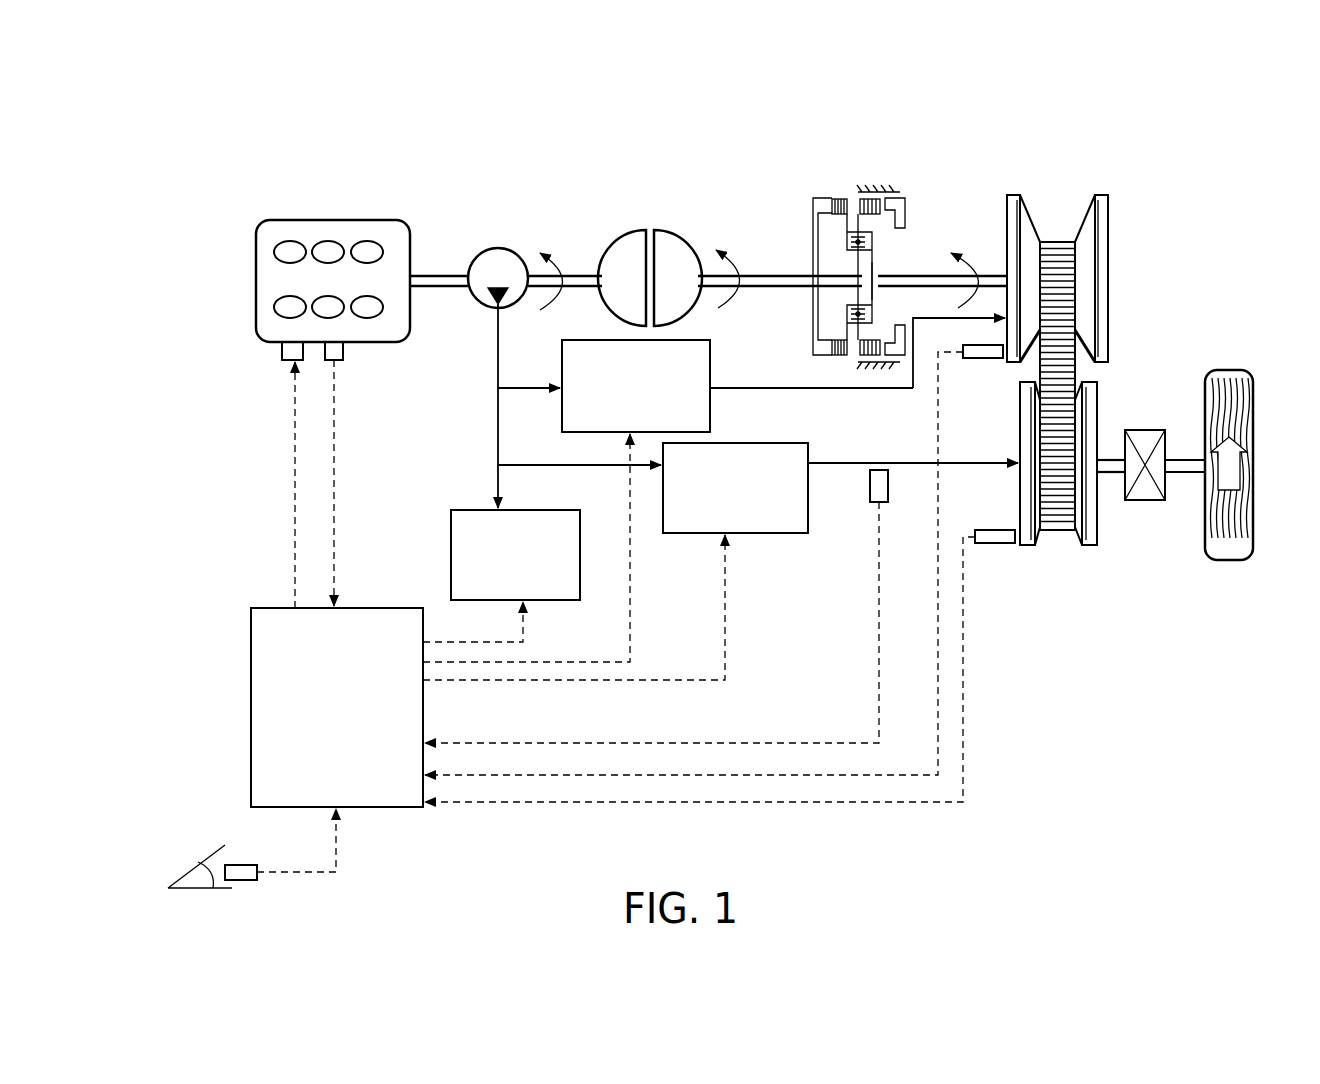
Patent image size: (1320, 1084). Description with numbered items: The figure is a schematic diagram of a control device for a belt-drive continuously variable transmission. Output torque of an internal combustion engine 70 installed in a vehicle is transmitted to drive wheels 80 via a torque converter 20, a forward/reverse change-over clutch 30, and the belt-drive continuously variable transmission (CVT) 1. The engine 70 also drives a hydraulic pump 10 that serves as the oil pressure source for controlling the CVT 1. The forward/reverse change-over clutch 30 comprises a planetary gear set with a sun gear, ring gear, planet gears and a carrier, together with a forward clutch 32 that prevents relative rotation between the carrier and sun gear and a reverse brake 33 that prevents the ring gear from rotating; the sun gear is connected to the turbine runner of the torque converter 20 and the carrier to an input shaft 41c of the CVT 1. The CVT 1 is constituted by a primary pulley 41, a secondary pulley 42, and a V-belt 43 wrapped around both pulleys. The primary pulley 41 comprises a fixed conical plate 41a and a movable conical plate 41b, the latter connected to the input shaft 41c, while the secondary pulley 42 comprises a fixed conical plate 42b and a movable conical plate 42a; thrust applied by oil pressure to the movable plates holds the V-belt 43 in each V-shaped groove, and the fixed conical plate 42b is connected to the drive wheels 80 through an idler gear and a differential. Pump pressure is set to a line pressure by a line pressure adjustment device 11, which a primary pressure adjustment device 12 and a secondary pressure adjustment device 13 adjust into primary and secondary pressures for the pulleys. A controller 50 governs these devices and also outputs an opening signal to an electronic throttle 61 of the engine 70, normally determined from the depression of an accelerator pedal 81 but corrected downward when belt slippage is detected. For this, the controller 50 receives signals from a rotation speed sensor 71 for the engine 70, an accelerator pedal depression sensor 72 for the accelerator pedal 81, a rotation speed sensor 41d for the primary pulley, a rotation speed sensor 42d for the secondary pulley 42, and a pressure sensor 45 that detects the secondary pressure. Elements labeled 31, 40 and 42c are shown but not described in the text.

The belt-drive continuously variable transmission 1 is at (1160, 128).
The hydraulic pump 10 is at (498, 248).
The line pressure adjustment device 11 is at (470, 508).
The primary pressure adjustment device 12 is at (712, 365).
The secondary pressure adjustment device 13 is at (688, 535).
The torque converter 20 is at (636, 230).
The forward/reverse change-over clutch 30 is at (857, 245).
The forward clutch 31 is at (856, 208).
The forward clutch 32 is at (830, 192).
The reverse brake 33 is at (880, 224).
The continuously variable transmission 40 is at (1055, 130).
The primary pulley 41 is at (1037, 260).
The fixed conical plate 41a is at (1102, 192).
The movable conical plate 41b is at (1013, 192).
The input shaft 41c is at (975, 274).
The rotation speed sensor 41d is at (975, 360).
The secondary pulley 42 is at (1006, 492).
The movable conical plate 42a is at (1032, 548).
The fixed conical plate 42b is at (1092, 548).
The output shaft 42c is at (1113, 455).
The rotation speed sensor 42d is at (988, 545).
The V-belt 43 is at (1078, 366).
The pressure sensor 45 is at (868, 490).
The controller 50 is at (266, 606).
The electronic throttle 61 is at (283, 357).
The internal combustion engine 70 is at (307, 216).
The rotation speed sensor 71 is at (344, 356).
The accelerator pedal depression sensor 72 is at (242, 880).
The drive wheels 80 is at (1228, 562).
The accelerator pedal 81 is at (206, 858).